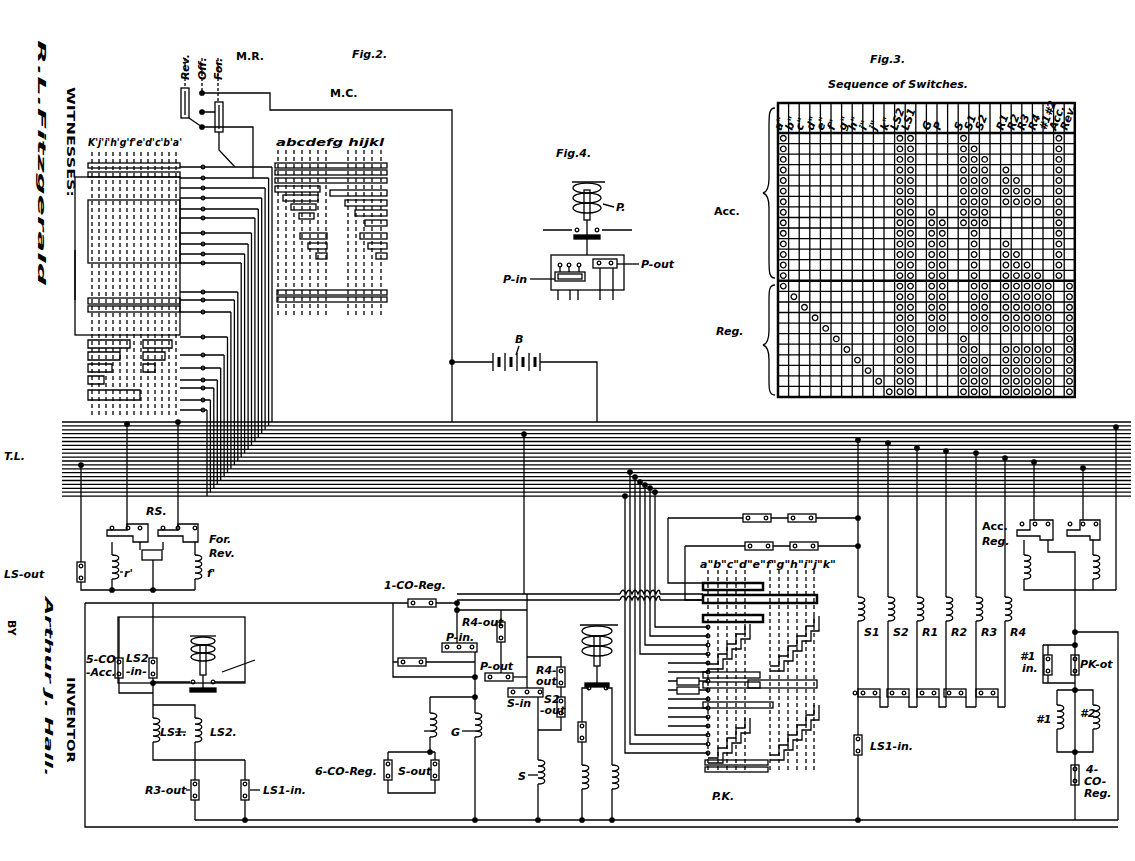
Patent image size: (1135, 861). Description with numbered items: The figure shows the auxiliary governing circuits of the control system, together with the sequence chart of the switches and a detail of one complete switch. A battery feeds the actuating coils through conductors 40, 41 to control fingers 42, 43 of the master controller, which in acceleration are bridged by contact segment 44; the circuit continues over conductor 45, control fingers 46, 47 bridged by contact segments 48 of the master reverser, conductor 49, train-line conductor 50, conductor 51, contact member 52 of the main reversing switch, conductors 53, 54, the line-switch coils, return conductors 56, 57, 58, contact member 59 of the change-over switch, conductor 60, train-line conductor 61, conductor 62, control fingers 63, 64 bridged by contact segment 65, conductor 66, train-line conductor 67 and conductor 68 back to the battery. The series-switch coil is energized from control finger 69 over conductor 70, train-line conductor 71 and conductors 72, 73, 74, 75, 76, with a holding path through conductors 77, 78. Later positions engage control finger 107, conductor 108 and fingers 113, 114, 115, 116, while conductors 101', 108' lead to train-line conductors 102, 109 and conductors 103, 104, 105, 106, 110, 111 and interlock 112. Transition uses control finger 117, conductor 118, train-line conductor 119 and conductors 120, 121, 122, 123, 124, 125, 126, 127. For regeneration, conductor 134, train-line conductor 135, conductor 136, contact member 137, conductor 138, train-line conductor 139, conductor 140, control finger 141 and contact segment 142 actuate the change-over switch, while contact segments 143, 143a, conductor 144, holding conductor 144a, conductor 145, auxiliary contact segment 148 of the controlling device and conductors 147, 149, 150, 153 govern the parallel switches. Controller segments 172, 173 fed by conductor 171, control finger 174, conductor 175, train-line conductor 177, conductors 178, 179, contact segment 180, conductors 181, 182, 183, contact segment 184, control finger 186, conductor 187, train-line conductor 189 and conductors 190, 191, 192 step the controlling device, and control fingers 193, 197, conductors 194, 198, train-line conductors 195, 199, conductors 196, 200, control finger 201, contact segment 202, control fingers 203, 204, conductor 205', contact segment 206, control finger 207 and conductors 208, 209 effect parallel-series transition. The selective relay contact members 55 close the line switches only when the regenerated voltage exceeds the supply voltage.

The conductor 40 is at (477, 356).
The conductor 41 is at (452, 255).
The control finger 42 is at (178, 299).
The control finger 43 is at (180, 291).
The contact segment 44 is at (387, 170).
The conductor 45 is at (222, 149).
The control finger 46 is at (191, 110).
The control finger 47 is at (233, 121).
The contact segments 48 is at (223, 104).
The conductor 49 is at (284, 323).
The train-line conductor 50 is at (314, 432).
The conductor 51 is at (122, 507).
The contact member 52 is at (153, 473).
The conductor 53 is at (151, 567).
The conductor 54 is at (165, 580).
The auxiliary contact members 55 is at (214, 692).
The negative conductor 56 is at (168, 824).
The conductor 57 is at (1076, 594).
The conductor 58 is at (1056, 571).
The contact member 59 is at (1042, 522).
The conductor 60 is at (1034, 507).
The train-line conductor 61 is at (496, 430).
The conductor 62 is at (252, 356).
The control finger 63 is at (209, 372).
The control finger 64 is at (207, 379).
The contact segment 65 is at (330, 304).
The conductor 66 is at (248, 368).
The train-line conductor 67 is at (428, 432).
The conductor 68 is at (597, 390).
The control finger 69 is at (222, 306).
The conductor 70 is at (262, 333).
The train-line conductor 71 is at (332, 434).
The conductor 72 is at (524, 520).
The conductor 73 is at (527, 621).
The conductor 74 is at (527, 643).
The conductor 75 is at (555, 735).
The conductor 76 is at (538, 745).
The conductor 77 is at (526, 660).
The conductor 78 is at (540, 725).
The conductor 101' is at (245, 205).
The train-line conductor 102 is at (372, 444).
The conductor 103 is at (858, 506).
The conductor 104 is at (858, 534).
The conductor 105 is at (858, 710).
The conductor 106 is at (858, 787).
The control finger 107 is at (217, 327).
The conductor 108 is at (219, 320).
The conductor 108' is at (245, 217).
The train-line conductor 109 is at (400, 448).
The conductor 110 is at (858, 521).
The conductor 111 is at (880, 710).
The interlock 112 is at (853, 693).
The control finger 113 is at (216, 336).
The control finger 114 is at (214, 343).
The control finger 115 is at (212, 350).
The control finger 116 is at (210, 357).
The control finger 117 is at (221, 313).
The conductor 118 is at (258, 345).
The train-line conductor 119 is at (352, 437).
The conductor 120 is at (452, 516).
The conductor 121 is at (522, 612).
The conductor 122 is at (487, 679).
The conductor 123 is at (475, 694).
The conductor 124 is at (475, 761).
The conductor 125 is at (475, 797).
The conductor 126 is at (445, 700).
The conductor 127 is at (440, 795).
The conductor 134 is at (452, 390).
The train-line conductor 135 is at (470, 430).
The conductor 136 is at (1116, 502).
The contact member 137 is at (1089, 550).
The conductor 138 is at (1083, 502).
The train-line conductor 139 is at (331, 472).
The conductor 140 is at (245, 380).
The control finger 141 is at (205, 387).
The contact segment 142 is at (129, 313).
The contact segment 143 is at (127, 256).
The contact segment 143a is at (134, 231).
The conductor 144 is at (223, 603).
The conductor 144a is at (393, 630).
The conductor 145 is at (495, 593).
The conductor 147 is at (703, 584).
The auxiliary contact segment 148 is at (594, 596).
The conductor 149 is at (675, 530).
The conductor 150 is at (842, 522).
The conductor 153 is at (114, 602).
The conductor 171 is at (75, 298).
The contact segment 172 is at (88, 360).
The contact segment 173 is at (140, 358).
The control finger 174 is at (204, 402).
The conductor 175 is at (236, 404).
The train-line conductor 177 is at (364, 476).
The conductor 178 is at (628, 516).
The conductor 179 is at (672, 765).
The auxiliary contact segment 180 is at (740, 745).
The conductor 181 is at (694, 700).
The conductor 182 is at (620, 704).
The conductor 183 is at (688, 693).
The auxiliary contact segment 184 is at (732, 665).
The control finger 186 is at (202, 413).
The conductor 187 is at (206, 411).
The train-line conductor 189 is at (292, 478).
The conductor 190 is at (633, 528).
The conductor 191 is at (688, 661).
The conductor 192 is at (655, 755).
The control finger 193 is at (195, 443).
The conductor 194 is at (193, 450).
The train-line conductor 195 is at (247, 488).
The conductor 196 is at (622, 507).
The control finger 197 is at (197, 435).
The conductor 198 is at (240, 392).
The train-line conductor 199 is at (268, 484).
The conductor 200 is at (660, 509).
The control finger 201 is at (700, 615).
The contact segment 202 is at (792, 718).
The control finger 203 is at (760, 690).
The control finger 204 is at (724, 604).
The conductor 205' is at (599, 647).
The contact segment 206 is at (790, 662).
The control finger 207 is at (731, 681).
The conductor 208 is at (702, 560).
The conductor 209 is at (832, 556).